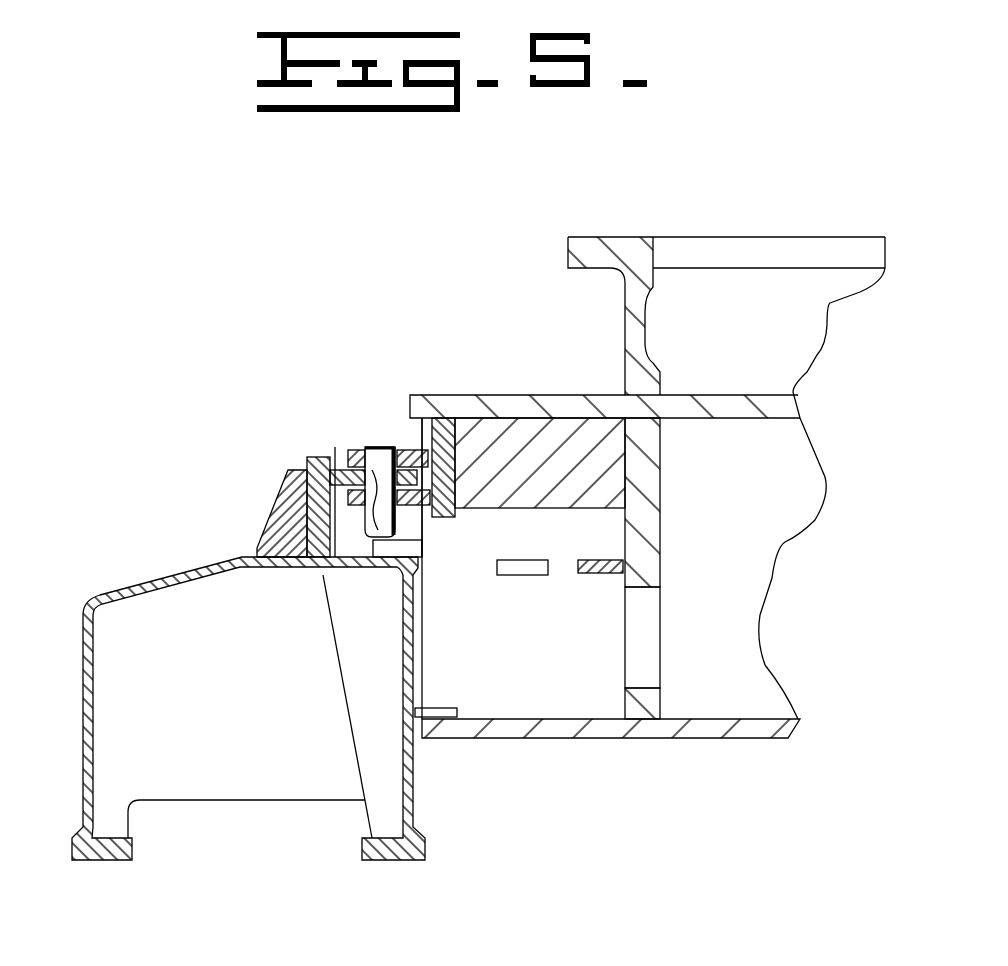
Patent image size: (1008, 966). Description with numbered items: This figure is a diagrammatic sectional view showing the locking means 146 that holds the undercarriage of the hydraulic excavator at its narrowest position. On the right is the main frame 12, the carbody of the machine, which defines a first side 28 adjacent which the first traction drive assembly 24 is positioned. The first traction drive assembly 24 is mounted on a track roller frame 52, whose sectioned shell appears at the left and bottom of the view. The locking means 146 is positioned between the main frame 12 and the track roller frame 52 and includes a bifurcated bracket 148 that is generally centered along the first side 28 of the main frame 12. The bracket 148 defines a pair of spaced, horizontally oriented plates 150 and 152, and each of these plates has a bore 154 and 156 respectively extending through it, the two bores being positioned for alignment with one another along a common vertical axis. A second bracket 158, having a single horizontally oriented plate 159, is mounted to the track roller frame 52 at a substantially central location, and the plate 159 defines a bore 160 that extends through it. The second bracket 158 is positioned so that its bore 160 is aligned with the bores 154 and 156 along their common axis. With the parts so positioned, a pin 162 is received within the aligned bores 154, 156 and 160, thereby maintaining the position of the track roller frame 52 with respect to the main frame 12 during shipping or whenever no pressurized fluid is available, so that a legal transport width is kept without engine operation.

The main frame 12 is at (785, 502).
The first traction drive assembly 24 is at (226, 737).
The first side 28 is at (430, 395).
The track roller frame 52 is at (92, 600).
The locking means 146 is at (215, 382).
The bifurcated bracket 148 is at (455, 517).
The plate 150 is at (352, 450).
The plate 152 is at (362, 475).
The bore 154 is at (387, 447).
The bore 156 is at (397, 515).
The second bracket 158 is at (295, 465).
The plate 159 is at (333, 450).
The bore 160 is at (368, 510).
The pin 162 is at (392, 512).